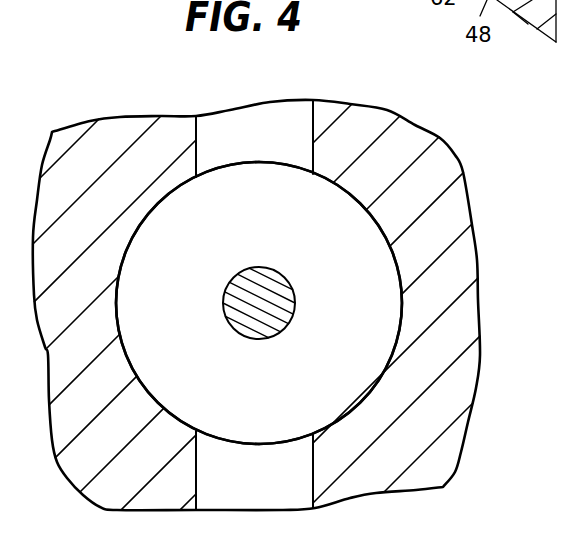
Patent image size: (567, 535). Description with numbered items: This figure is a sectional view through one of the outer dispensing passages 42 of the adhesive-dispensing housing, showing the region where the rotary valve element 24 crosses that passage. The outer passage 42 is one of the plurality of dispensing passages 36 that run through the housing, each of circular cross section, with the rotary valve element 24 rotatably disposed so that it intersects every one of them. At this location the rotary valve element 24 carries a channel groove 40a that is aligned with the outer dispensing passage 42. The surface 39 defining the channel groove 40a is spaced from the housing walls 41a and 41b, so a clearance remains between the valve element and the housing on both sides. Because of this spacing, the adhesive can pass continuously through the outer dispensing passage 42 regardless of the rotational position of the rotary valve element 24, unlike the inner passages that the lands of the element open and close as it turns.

The outer passage 42 is at (73, 135).
The adhesive dispensing passage 36 is at (236, 122).
The channel groove 40a is at (376, 278).
The wall 41a is at (127, 249).
The wall 41b is at (381, 230).
The surface 39 is at (296, 304).
The rotary valve element 24 is at (247, 311).